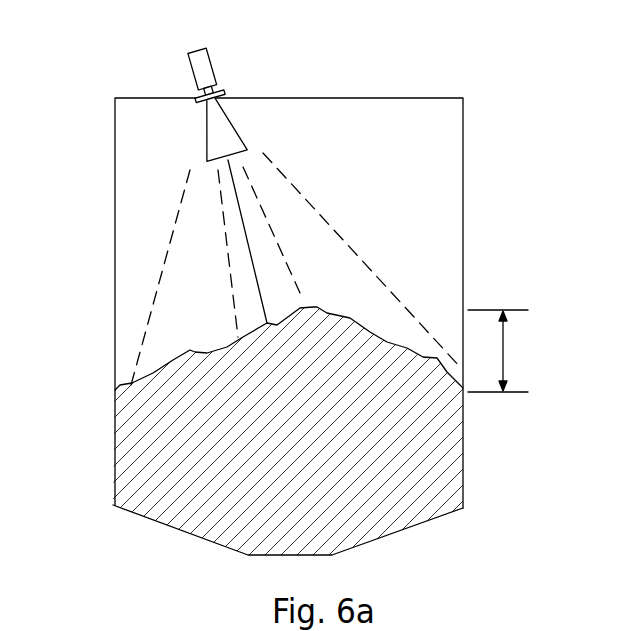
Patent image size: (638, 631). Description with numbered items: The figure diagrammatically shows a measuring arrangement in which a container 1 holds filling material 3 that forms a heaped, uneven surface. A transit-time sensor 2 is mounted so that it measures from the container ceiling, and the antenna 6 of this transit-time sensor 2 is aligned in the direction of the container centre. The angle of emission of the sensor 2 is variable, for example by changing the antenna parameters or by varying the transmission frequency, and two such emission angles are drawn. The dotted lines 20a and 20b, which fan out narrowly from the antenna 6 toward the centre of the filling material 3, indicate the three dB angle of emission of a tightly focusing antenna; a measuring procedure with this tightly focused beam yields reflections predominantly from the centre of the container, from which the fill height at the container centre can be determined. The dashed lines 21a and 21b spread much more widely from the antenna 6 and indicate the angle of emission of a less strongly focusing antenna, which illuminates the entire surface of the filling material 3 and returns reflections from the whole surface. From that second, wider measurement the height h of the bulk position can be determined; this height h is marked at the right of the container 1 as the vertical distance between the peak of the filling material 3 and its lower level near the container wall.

The container 1 is at (115, 182).
The transit-time sensor 2 is at (215, 58).
The filling material 3 is at (442, 453).
The antenna 6 is at (237, 123).
The dotted line 20a is at (230, 263).
The dotted line 20b is at (286, 268).
The dashed line 21a is at (167, 258).
The dashed line 21b is at (340, 238).
The height of the bulk position h is at (498, 351).